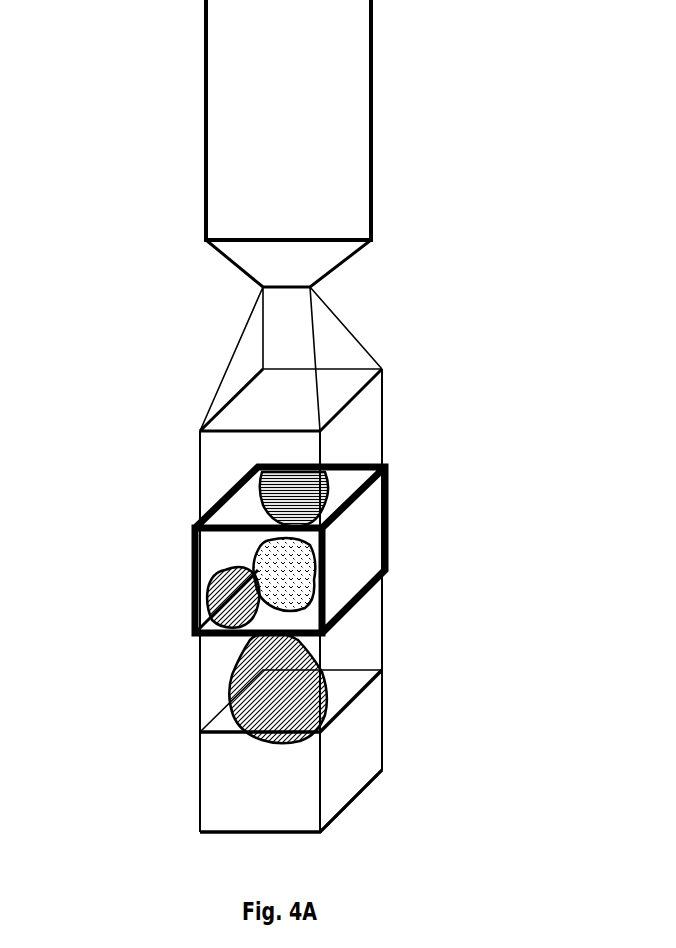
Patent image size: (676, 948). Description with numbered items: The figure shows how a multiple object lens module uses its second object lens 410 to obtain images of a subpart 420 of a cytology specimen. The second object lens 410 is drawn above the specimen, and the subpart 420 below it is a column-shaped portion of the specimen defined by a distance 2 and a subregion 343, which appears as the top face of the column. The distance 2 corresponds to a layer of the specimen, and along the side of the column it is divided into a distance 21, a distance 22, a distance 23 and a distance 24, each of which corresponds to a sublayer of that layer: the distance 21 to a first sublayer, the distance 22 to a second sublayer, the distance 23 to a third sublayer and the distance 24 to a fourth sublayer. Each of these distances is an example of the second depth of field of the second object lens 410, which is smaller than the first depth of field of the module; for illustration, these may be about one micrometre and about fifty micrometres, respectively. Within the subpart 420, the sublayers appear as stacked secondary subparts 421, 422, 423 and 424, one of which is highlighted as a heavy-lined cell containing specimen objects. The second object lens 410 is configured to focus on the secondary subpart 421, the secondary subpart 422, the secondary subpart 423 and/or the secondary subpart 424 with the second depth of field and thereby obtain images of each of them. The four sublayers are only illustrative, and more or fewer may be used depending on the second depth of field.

The second object lens 410 is at (382, 76).
The subpart 420 is at (273, 535).
The subregion 343 is at (291, 400).
The secondary subpart 421 is at (370, 434).
The secondary subpart 422 is at (372, 528).
The secondary subpart 423 is at (385, 641).
The secondary subpart 424 is at (382, 728).
The distance 2 is at (413, 747).
The distance 21 is at (135, 440).
The distance 22 is at (135, 613).
The distance 23 is at (135, 633).
The distance 24 is at (135, 740).